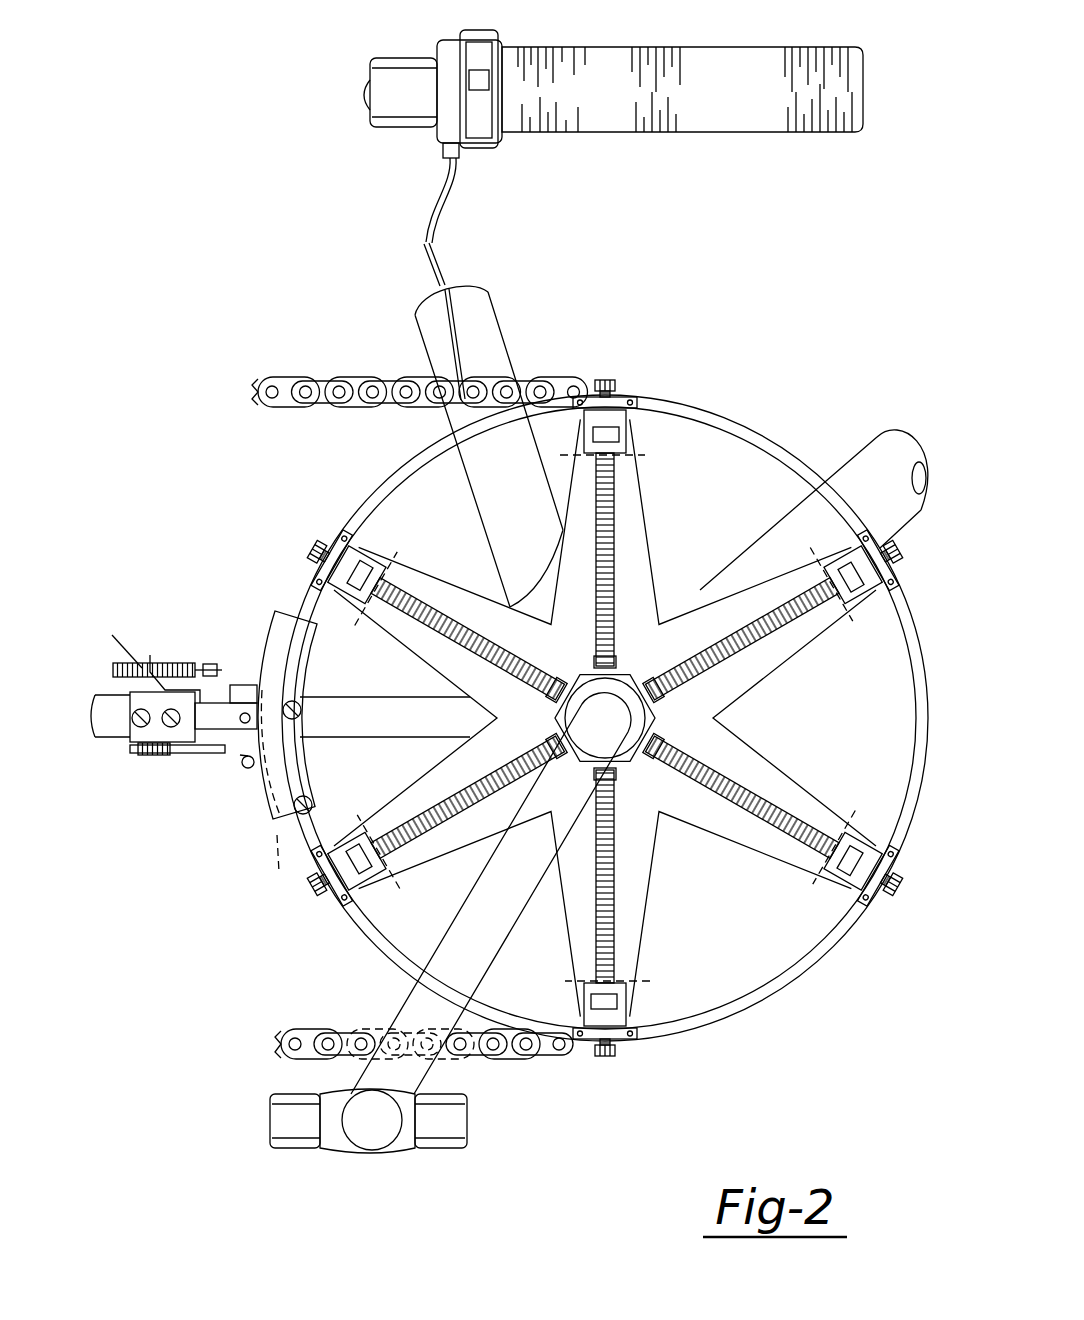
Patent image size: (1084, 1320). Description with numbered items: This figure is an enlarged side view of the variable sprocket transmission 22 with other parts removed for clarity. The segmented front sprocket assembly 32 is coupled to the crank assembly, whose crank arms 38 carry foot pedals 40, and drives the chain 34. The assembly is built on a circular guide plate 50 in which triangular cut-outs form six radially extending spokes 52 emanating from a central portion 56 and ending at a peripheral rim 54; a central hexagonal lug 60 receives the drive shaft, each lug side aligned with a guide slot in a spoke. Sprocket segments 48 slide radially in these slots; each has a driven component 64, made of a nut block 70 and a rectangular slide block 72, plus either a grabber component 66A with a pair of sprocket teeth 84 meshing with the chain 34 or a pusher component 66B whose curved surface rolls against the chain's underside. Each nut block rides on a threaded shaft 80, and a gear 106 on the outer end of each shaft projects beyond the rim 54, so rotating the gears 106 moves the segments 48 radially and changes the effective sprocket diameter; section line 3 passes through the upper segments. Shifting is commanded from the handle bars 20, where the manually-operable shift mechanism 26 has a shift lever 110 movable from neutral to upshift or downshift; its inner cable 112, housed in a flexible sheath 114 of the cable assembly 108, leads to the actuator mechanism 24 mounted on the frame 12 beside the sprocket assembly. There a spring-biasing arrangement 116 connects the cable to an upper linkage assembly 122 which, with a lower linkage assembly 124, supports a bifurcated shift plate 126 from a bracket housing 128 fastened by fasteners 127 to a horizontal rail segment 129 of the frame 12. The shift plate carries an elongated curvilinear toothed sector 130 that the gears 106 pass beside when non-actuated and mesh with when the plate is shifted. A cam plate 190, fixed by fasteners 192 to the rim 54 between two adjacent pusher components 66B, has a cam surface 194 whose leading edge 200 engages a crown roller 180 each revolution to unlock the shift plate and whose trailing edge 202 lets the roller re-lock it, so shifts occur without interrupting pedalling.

The frame 12 is at (490, 330).
The handle bars 20 is at (410, 58).
The variable sprocket transmission 22 is at (205, 400).
The actuator mechanism 24 is at (178, 760).
The manually-operable shift mechanism 26 is at (689, 44).
The segmented front sprocket assembly 32 is at (325, 490).
The chain 34 is at (330, 378).
The crank arms 38 is at (430, 972).
The foot pedals 40 is at (280, 1148).
The sprocket segments 48 is at (388, 552).
The circular guide plate 50 is at (664, 582).
The spokes 52 is at (563, 554).
The peripheral rim 54 is at (760, 440).
The central portion 56 is at (611, 700).
The central hexagonal lug 60 is at (658, 718).
The driven component 64 is at (430, 598).
The grabber components 66A is at (578, 398).
The pusher components 66B is at (840, 900).
The nut block 70 is at (585, 990).
The slide block 72 is at (625, 995).
The threaded shaft 80 is at (600, 640).
The sprocket teeth 84 is at (626, 394).
The gear 106 is at (893, 545).
The cable assembly 108 is at (455, 212).
The shift lever 110 is at (492, 76).
The inner cable 112 is at (442, 268).
The flexible sheath 114 is at (441, 185).
The spring-biasing arrangement 116 is at (150, 652).
The upper linkage assembly 122 is at (195, 665).
The lower linkage assembly 124 is at (200, 762).
The bifurcated shift plate 126 is at (245, 683).
The fasteners 127 is at (108, 641).
The bracket housing 128 is at (150, 757).
The horizontal rail segment 129 is at (110, 737).
The toothed sector 130 is at (285, 612).
The crown roller 180 is at (247, 768).
The cam plate 190 is at (385, 717).
The fasteners 192 is at (302, 712).
The cam surface 194 is at (258, 820).
The leading edge 200 is at (290, 680).
The trailing edge 202 is at (278, 862).
The section line 3- 3 is at (550, 400).